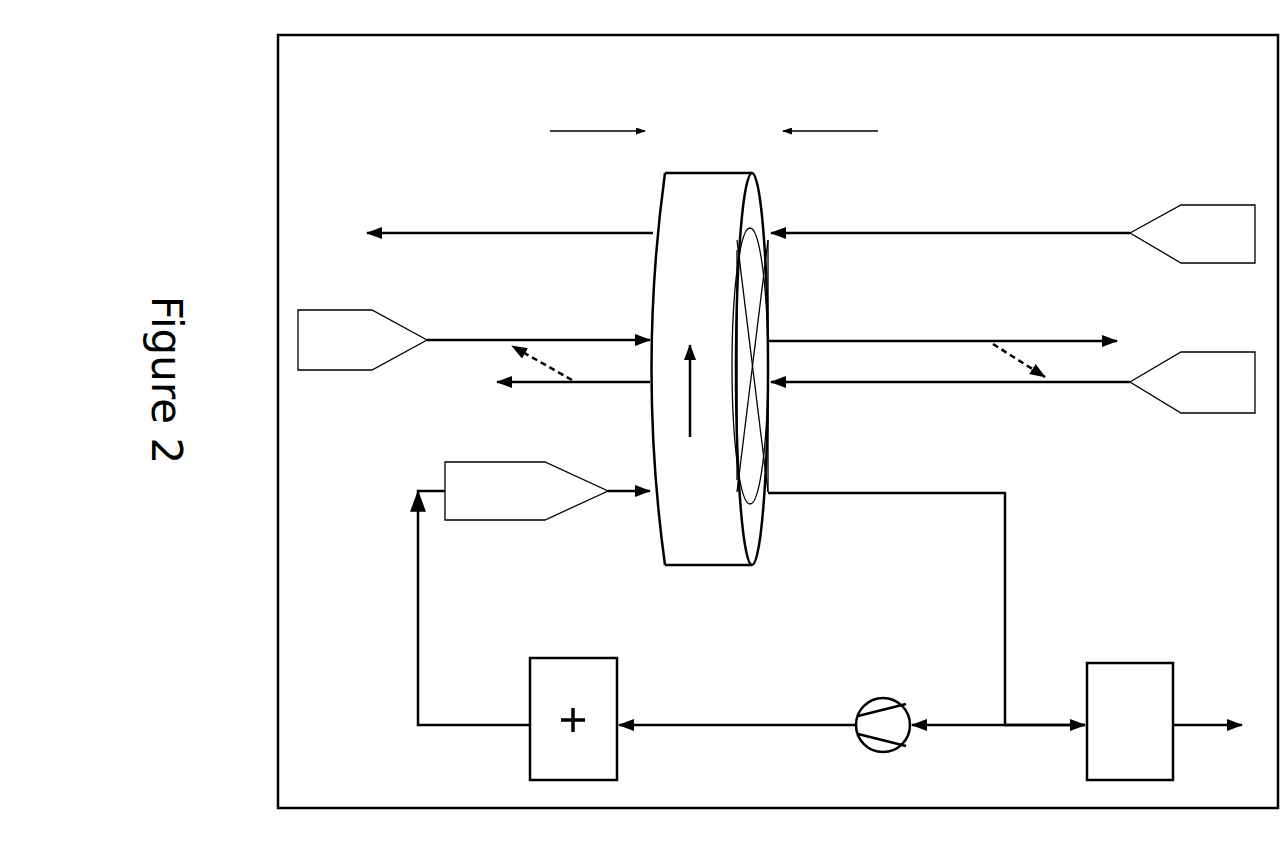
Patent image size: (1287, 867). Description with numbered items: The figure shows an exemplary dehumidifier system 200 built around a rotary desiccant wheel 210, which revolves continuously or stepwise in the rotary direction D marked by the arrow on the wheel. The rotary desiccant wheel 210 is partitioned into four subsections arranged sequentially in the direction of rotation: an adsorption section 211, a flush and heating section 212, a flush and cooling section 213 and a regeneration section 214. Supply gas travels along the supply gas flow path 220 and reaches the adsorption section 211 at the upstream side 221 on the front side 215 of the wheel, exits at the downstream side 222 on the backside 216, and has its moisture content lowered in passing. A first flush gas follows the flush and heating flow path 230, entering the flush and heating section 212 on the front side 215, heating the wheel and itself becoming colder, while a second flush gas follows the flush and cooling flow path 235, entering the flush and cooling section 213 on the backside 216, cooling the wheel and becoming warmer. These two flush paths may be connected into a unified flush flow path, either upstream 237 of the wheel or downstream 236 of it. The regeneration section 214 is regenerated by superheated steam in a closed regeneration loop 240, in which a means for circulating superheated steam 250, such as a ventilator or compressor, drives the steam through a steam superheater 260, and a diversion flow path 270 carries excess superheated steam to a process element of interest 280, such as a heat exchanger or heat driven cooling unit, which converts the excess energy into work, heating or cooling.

The dehumidifier system 200 is at (778, 421).
The rotary desiccant wheel 210 is at (710, 168).
The adsorption section 211 is at (771, 270).
The flush and heating section 212 is at (771, 305).
The flush and cooling section 213 is at (771, 424).
The regeneration section 214 is at (771, 457).
The front side 215 is at (860, 131).
The backside 216 is at (567, 131).
The supply gas flow path 220 is at (1087, 246).
The upstream side 221 is at (1035, 229).
The downstream side 222 is at (413, 229).
The flush and heating flow path 230 is at (1087, 392).
The flush and cooling flow path 235 is at (538, 333).
The unified flush flow path downstream connection 236 is at (535, 375).
The unified flush flow path upstream connection 237 is at (1020, 372).
The closed regeneration loop 240 is at (1012, 522).
The means for circulating superheated steam 250 is at (883, 694).
The steam superheater 260 is at (573, 652).
The diversion flow path 270 is at (1045, 712).
The process element of interest 280 is at (1132, 655).